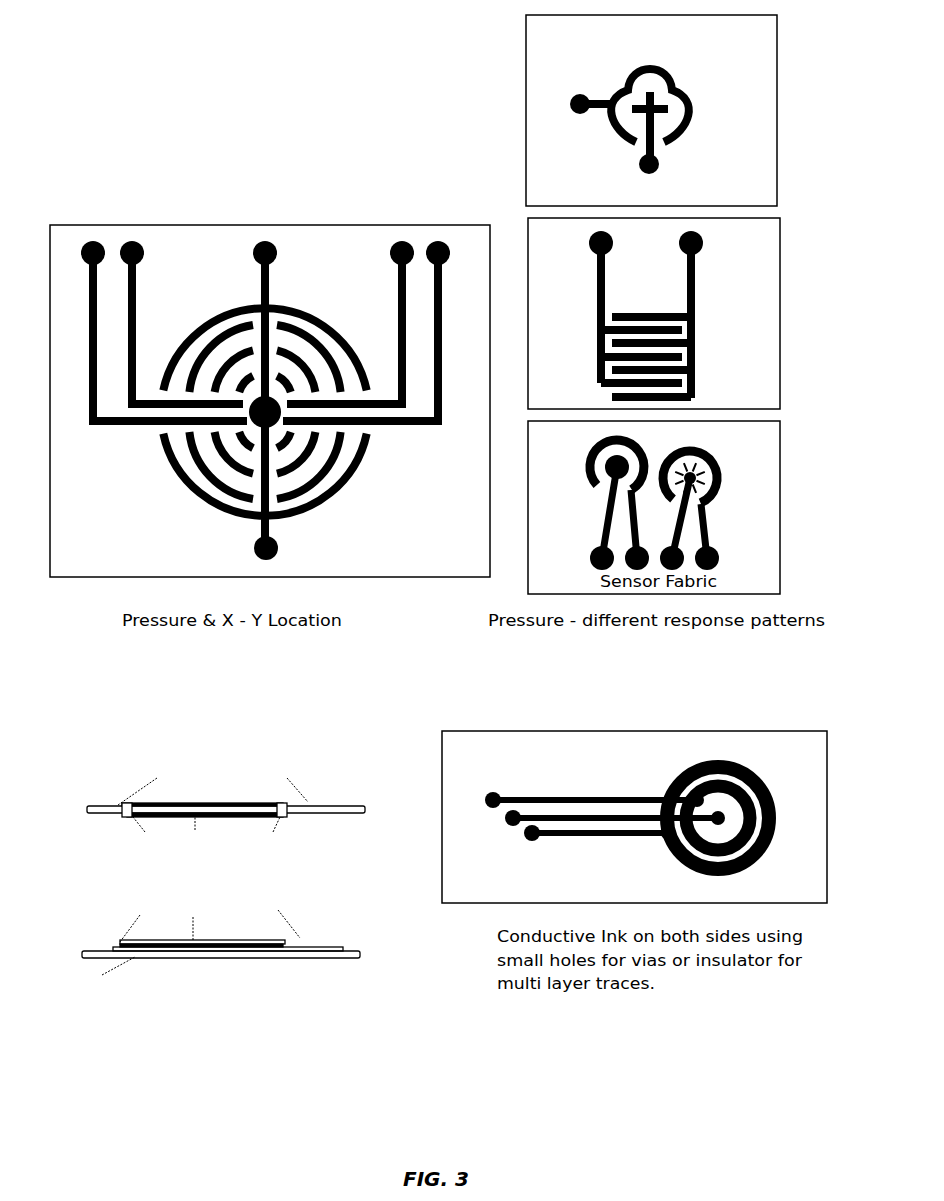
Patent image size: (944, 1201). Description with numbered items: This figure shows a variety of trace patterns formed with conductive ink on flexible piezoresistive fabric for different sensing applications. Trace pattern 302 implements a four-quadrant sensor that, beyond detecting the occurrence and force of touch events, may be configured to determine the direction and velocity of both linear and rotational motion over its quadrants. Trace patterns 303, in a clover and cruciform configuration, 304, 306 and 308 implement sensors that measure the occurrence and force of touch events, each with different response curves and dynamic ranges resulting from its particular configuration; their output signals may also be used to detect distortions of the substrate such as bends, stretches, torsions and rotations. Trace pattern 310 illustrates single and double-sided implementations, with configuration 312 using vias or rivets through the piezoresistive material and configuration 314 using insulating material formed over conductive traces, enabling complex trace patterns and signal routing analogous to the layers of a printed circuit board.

The trace pattern 302 is at (129, 212).
The trace pattern 303 is at (733, 108).
The trace pattern 304 is at (748, 280).
The trace pattern 306 is at (572, 485).
The trace pattern 308 is at (742, 472).
The trace pattern 310 is at (778, 800).
The configuration 312 is at (103, 772).
The configuration 314 is at (103, 900).